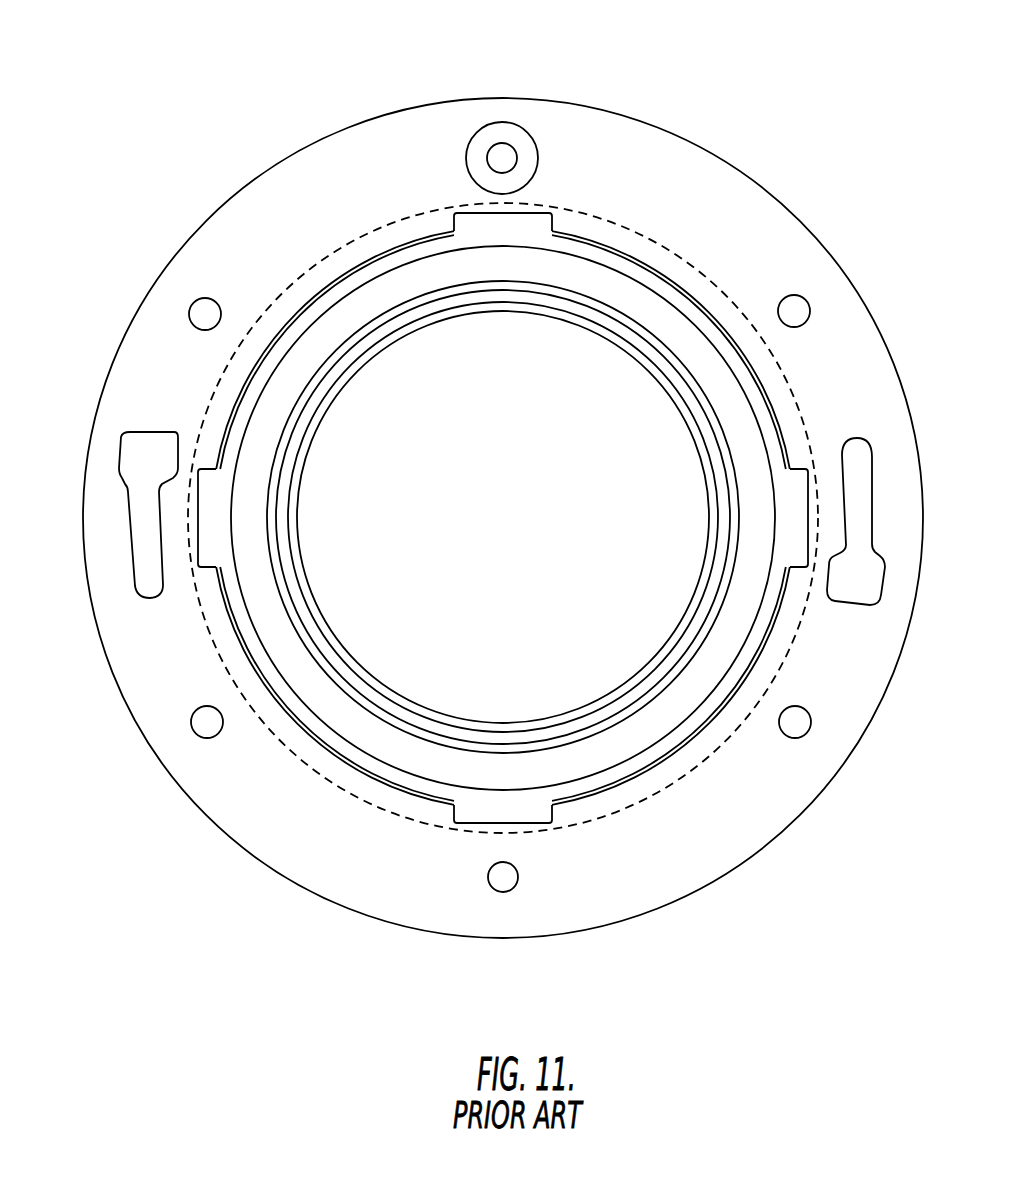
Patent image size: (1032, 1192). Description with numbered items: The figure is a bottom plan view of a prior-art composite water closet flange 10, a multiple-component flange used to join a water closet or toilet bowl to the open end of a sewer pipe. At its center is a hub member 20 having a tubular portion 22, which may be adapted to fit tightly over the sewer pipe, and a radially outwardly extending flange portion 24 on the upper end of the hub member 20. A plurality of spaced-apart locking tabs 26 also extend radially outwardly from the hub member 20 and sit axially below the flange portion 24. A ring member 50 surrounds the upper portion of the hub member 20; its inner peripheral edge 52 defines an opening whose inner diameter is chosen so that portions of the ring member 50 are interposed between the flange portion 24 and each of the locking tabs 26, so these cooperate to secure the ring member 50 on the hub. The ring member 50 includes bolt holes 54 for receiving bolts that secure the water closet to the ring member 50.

The composite water closet flange 10 is at (297, 70).
The hub member 20 is at (667, 400).
The tubular portion 22 is at (287, 568).
The flange portion 24 is at (357, 798).
The locking tabs 26 is at (524, 219).
The ring member 50 is at (623, 926).
The inner peripheral edge 52 is at (768, 662).
The bolt holes 54 is at (515, 152).